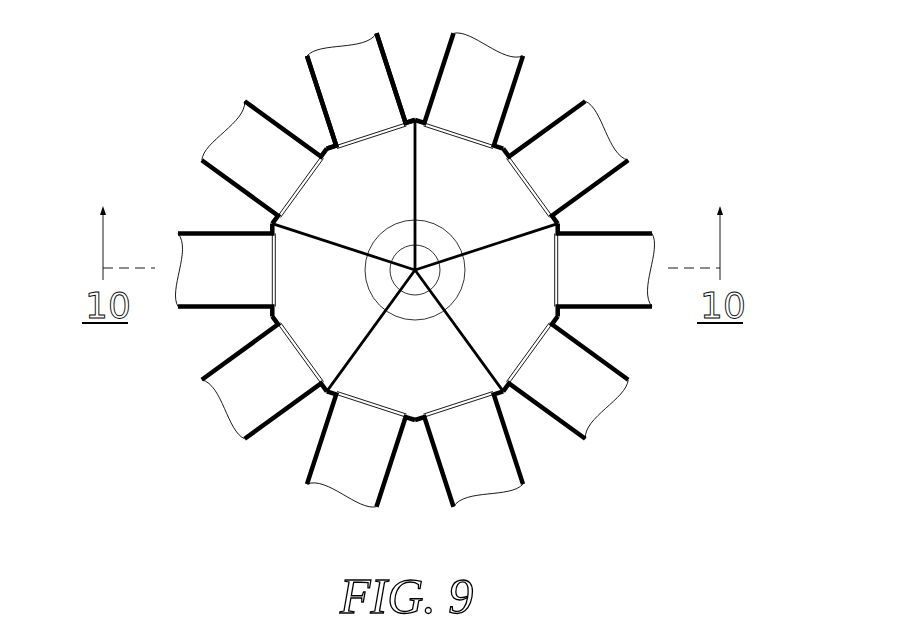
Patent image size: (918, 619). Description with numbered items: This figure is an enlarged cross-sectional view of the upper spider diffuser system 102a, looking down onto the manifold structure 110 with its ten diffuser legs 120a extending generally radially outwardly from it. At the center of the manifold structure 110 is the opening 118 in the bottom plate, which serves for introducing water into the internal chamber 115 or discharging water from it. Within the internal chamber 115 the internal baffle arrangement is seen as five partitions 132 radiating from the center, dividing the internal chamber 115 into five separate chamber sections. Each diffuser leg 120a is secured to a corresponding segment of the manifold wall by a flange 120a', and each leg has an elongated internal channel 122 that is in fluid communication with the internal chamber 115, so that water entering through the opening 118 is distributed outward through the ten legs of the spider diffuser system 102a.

The spider diffuser system 102a is at (291, 104).
The manifold structure 110 is at (417, 265).
The internal chamber 115 is at (467, 352).
The opening 118 is at (430, 222).
The diffuser leg 120a is at (393, 270).
The flange 120a' is at (653, 193).
The elongated internal channel 122 is at (558, 272).
The partition 132 is at (302, 228).